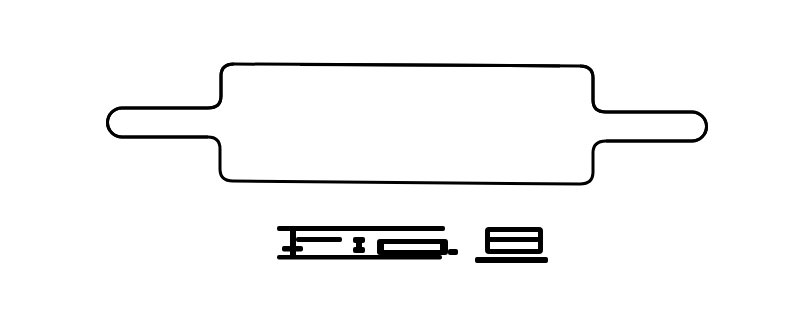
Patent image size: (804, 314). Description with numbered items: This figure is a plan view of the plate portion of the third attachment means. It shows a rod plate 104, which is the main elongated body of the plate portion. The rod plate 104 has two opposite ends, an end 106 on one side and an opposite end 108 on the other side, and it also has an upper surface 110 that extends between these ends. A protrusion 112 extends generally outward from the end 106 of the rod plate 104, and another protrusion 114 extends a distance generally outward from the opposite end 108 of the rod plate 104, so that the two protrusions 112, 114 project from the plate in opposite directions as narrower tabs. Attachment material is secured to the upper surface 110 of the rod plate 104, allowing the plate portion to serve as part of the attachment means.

The rod plate 104 is at (388, 93).
The end 106 is at (230, 88).
The opposite end 108 is at (595, 78).
The upper surface 110 is at (482, 78).
The protrusion 112 is at (135, 115).
The protrusion 114 is at (658, 123).